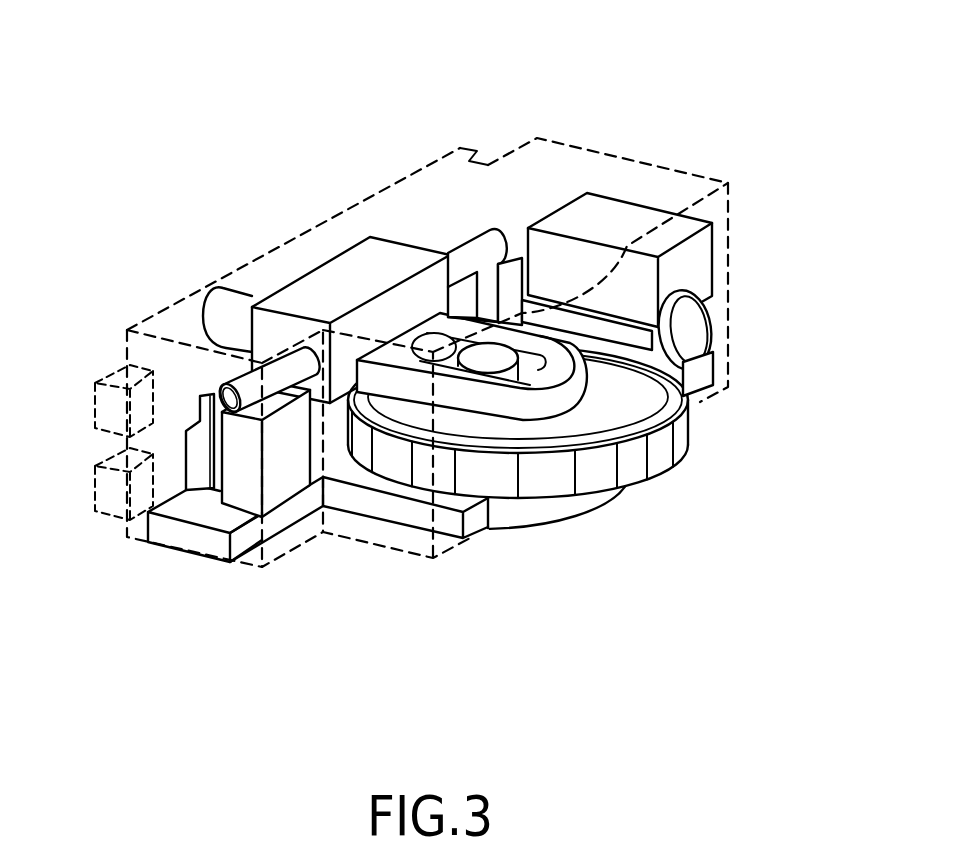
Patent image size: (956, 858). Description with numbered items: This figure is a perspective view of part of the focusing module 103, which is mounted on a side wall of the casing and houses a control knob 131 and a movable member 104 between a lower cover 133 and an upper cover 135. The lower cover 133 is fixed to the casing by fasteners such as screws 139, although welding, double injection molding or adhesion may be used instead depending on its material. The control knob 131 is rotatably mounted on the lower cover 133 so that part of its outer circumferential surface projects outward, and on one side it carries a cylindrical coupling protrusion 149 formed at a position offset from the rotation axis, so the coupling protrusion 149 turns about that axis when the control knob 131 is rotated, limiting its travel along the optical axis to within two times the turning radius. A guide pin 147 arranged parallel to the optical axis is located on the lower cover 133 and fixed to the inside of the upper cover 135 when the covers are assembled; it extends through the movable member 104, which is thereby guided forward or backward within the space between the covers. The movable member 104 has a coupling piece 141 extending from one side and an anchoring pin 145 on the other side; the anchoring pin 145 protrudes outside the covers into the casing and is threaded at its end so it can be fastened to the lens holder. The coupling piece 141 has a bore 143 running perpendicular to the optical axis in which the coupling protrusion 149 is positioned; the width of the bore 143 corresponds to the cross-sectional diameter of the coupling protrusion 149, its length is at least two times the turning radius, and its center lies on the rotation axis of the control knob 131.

The focusing module 103 is at (457, 34).
The movable member 104 is at (347, 273).
The control knob 131 is at (630, 460).
The lower cover 133 is at (525, 507).
The upper cover 135 is at (597, 157).
The screw 139 is at (693, 322).
The coupling piece 141 is at (700, 398).
The bore 143 is at (530, 372).
The anchoring pin 145 is at (227, 302).
The guide pin 147 is at (228, 393).
The coupling protrusion 149 is at (477, 355).